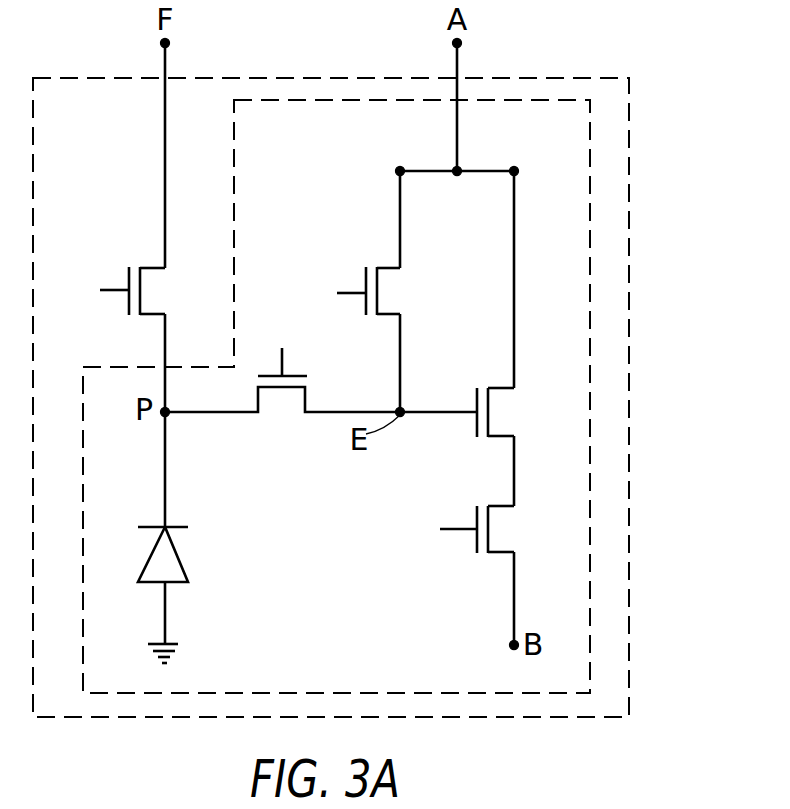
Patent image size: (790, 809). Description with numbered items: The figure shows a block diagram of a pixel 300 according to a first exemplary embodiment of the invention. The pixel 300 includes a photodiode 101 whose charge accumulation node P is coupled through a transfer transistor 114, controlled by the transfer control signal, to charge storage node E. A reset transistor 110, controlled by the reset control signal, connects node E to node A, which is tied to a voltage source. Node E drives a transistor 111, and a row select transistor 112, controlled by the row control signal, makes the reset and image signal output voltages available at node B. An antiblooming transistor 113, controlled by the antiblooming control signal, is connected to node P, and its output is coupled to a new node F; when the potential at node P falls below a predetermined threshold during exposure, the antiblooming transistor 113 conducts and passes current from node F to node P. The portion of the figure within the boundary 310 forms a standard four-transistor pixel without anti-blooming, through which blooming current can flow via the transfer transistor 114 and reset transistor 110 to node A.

The pixel 300 is at (630, 132).
The boundary 310 is at (591, 204).
The antiblooming transistor 113 is at (142, 284).
The reset transistor 110 is at (380, 282).
The transistor 111 is at (490, 402).
The row select transistor 112 is at (490, 521).
The transfer transistor 114 is at (288, 390).
The photodiode 101 is at (168, 560).